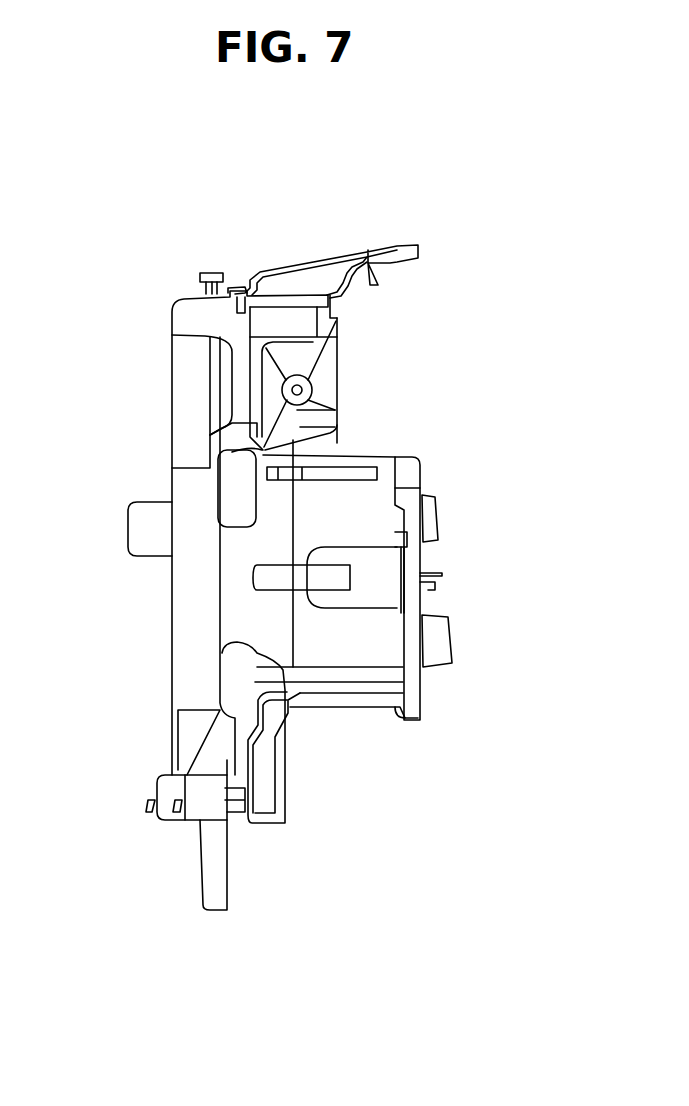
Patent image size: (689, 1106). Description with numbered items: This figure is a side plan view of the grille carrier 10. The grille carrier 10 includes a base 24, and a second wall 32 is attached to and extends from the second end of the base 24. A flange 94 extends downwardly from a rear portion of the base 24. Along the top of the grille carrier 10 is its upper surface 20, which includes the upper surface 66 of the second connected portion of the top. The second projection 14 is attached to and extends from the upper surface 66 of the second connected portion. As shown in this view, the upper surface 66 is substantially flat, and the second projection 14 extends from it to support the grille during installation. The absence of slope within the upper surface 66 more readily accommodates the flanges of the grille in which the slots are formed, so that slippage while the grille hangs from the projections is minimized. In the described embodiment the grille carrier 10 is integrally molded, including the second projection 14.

The grille carrier 10 is at (475, 358).
The second projection 14 is at (212, 273).
The upper surface 20 is at (312, 262).
The base 24 is at (157, 790).
The second wall 32 is at (172, 630).
The upper surface of the second connected portion 66 is at (187, 293).
The flange 94 is at (197, 895).